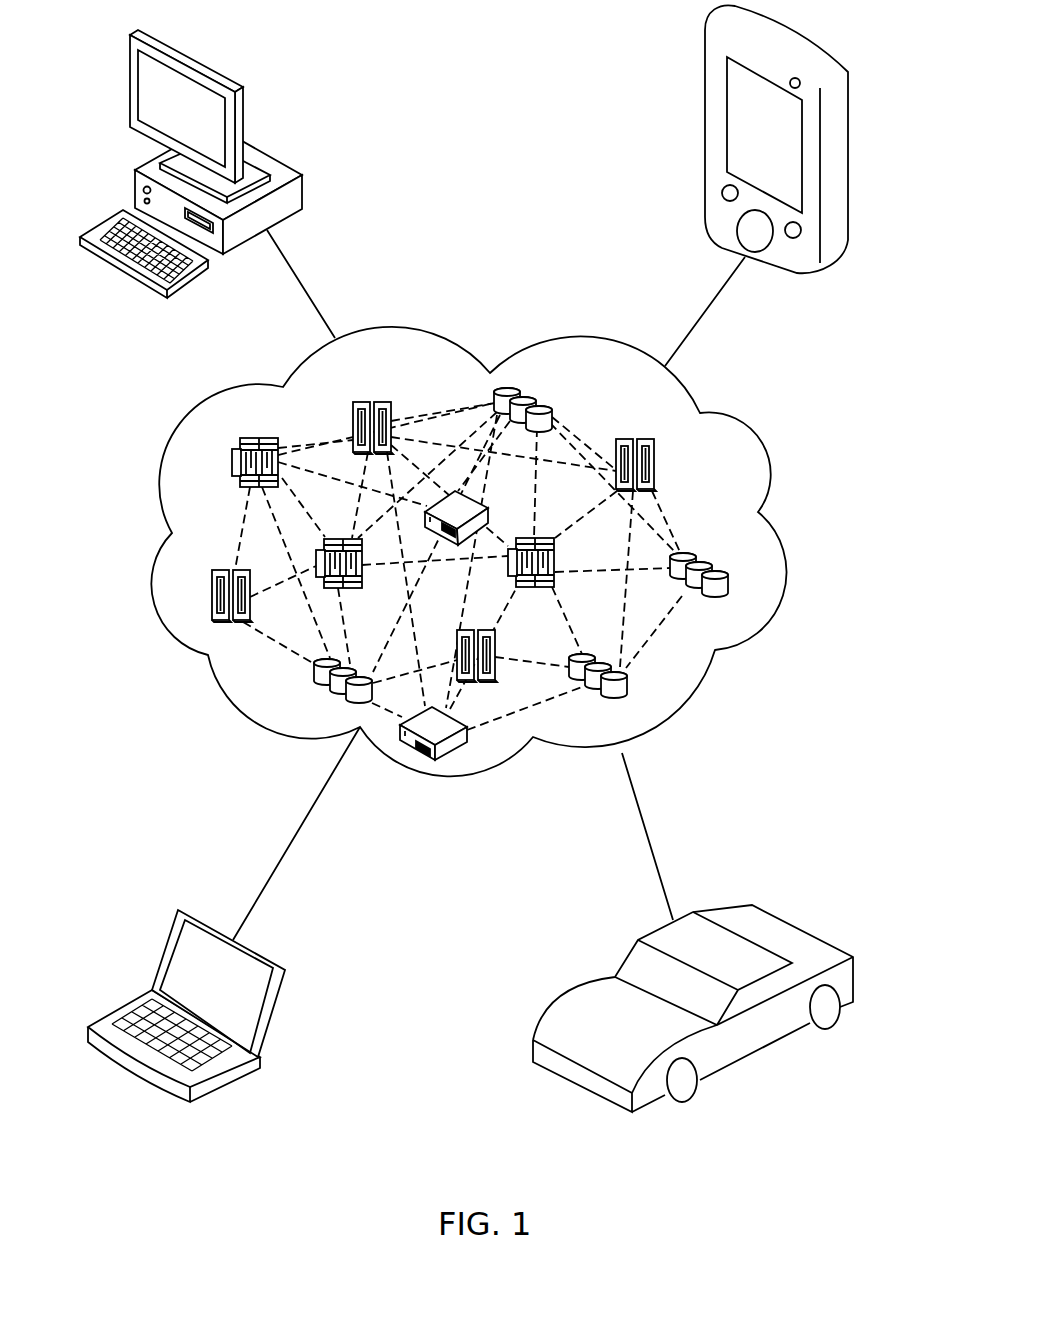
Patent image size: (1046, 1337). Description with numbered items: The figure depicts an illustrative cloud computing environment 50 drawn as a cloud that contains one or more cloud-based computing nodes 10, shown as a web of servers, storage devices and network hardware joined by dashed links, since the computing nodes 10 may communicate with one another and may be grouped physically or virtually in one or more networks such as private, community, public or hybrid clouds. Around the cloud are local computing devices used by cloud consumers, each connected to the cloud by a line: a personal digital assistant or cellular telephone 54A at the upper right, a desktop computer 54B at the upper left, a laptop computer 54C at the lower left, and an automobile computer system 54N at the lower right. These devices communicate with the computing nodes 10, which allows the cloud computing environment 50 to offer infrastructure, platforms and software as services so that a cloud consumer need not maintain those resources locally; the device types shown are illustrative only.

The cloud-based computing node 10 is at (710, 489).
The cloud computing environment 50 is at (759, 632).
The personal digital assistant (PDA) or cellular telephone 54A is at (704, 85).
The desktop computer 54B is at (304, 188).
The laptop computer 54C is at (284, 978).
The automobile computer system 54N is at (855, 975).